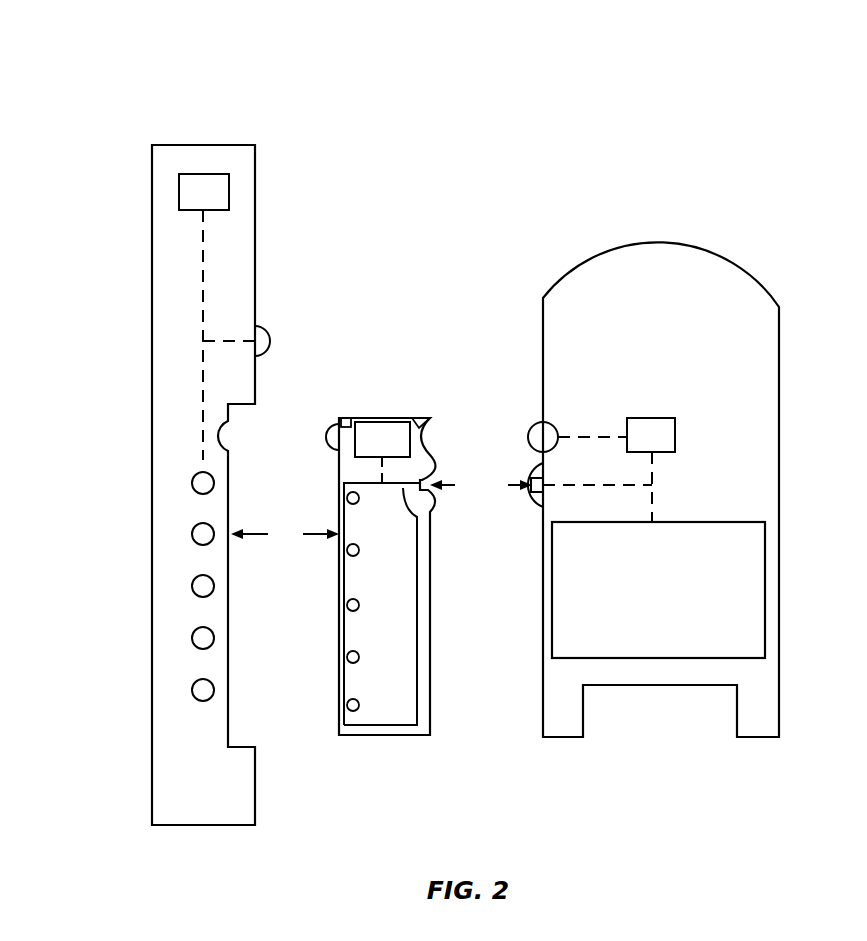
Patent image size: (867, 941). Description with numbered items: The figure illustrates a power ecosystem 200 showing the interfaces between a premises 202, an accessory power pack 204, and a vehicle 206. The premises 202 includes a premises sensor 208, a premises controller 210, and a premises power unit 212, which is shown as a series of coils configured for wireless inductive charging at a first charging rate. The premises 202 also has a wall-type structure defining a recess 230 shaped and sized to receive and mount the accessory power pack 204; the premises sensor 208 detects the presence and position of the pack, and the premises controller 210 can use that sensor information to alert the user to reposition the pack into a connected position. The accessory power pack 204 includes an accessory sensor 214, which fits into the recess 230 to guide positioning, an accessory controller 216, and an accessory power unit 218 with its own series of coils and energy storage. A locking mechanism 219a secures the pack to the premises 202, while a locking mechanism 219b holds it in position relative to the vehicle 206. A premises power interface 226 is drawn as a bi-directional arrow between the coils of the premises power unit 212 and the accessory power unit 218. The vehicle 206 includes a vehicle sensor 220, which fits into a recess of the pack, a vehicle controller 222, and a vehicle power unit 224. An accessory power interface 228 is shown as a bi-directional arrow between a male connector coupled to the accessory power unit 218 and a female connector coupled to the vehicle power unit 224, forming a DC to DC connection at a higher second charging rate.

The power ecosystem 200 is at (102, 46).
The premises 202 is at (152, 155).
The accessory power pack 204 is at (384, 737).
The vehicle 206 is at (566, 277).
The premises sensor 208 is at (262, 333).
The premises controller 210 is at (217, 317).
The premises power unit 212 is at (214, 636).
The accessory sensor 214 is at (326, 432).
The accessory controller 216 is at (382, 452).
The accessory power unit 218 is at (417, 593).
The locking mechanism 219a is at (349, 417).
The locking mechanism 219b is at (416, 417).
The vehicle sensor 220 is at (528, 426).
The vehicle controller 222 is at (651, 470).
The vehicle power unit 224 is at (658, 590).
The premises power interface 226 is at (285, 534).
The accessory power interface 228 is at (541, 485).
The recess 230 is at (229, 712).